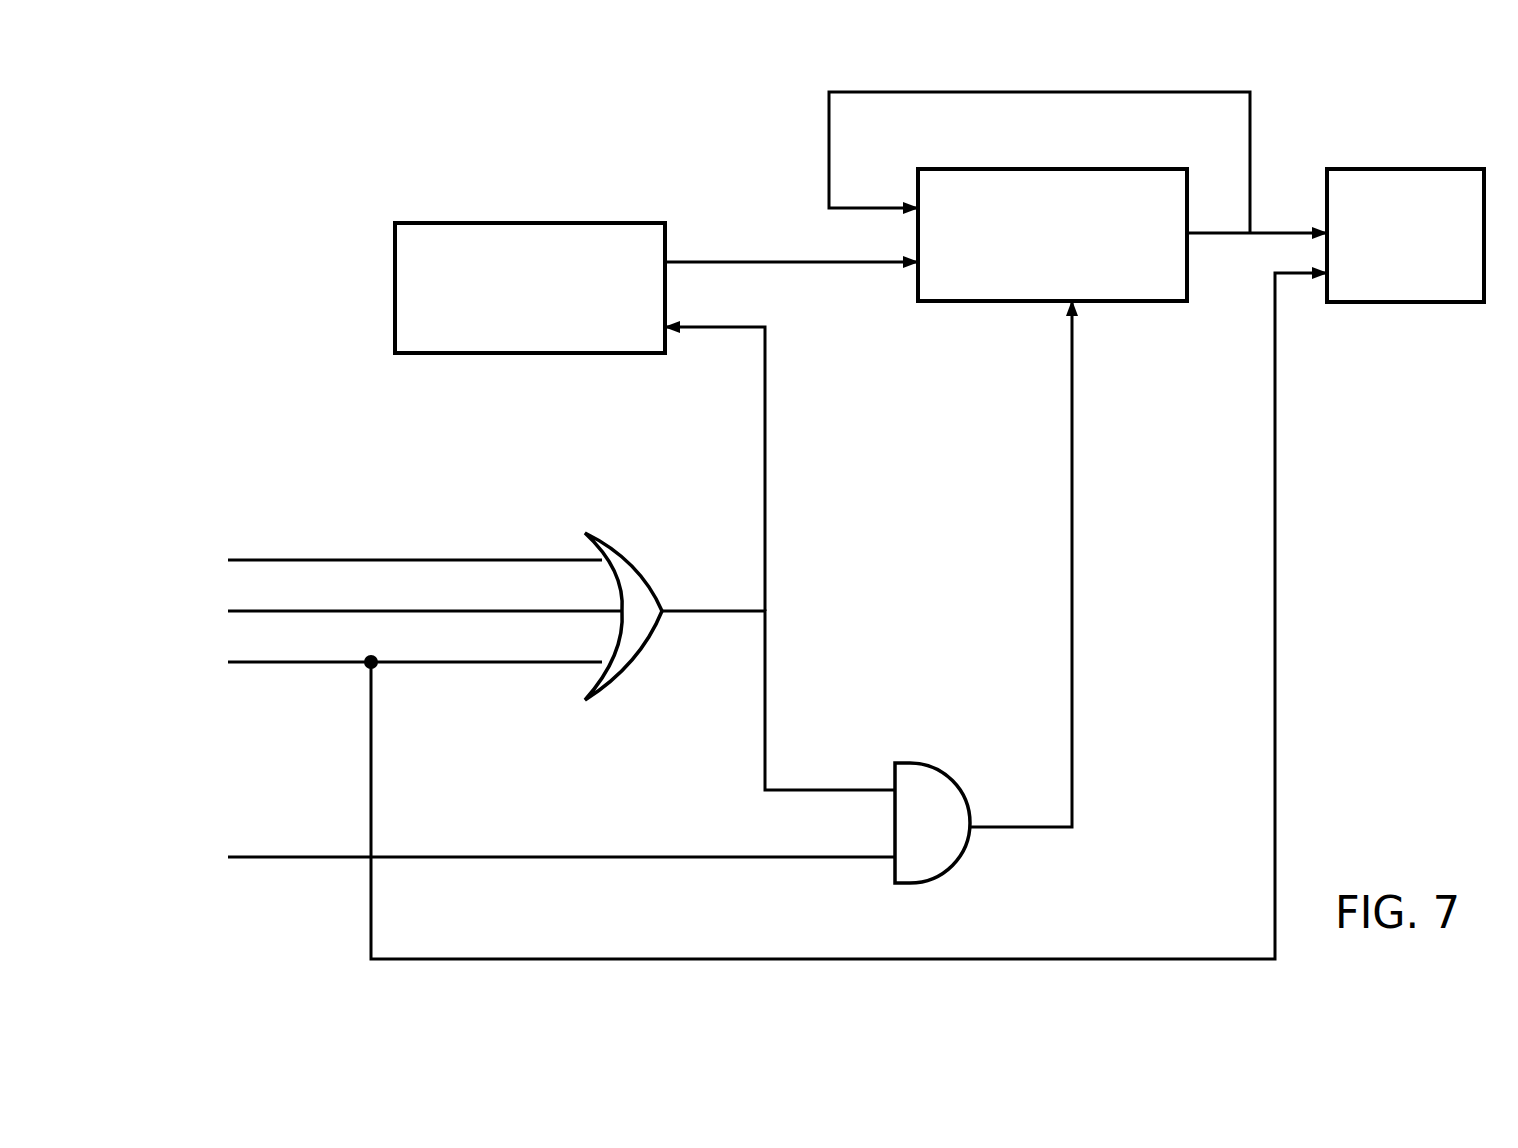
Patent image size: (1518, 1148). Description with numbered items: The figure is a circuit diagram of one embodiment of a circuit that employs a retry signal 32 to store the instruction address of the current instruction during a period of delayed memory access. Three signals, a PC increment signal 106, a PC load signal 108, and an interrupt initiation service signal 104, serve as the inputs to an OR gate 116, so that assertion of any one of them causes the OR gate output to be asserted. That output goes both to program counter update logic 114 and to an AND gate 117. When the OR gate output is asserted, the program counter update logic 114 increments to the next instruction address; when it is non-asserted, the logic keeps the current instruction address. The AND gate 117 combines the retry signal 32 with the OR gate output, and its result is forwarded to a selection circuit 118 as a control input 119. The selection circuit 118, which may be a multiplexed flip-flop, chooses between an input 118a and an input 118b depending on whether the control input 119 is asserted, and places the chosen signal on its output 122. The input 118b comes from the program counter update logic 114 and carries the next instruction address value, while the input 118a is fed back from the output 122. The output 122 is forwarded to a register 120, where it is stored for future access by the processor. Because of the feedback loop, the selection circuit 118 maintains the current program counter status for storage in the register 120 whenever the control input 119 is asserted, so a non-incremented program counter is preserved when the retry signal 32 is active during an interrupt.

The program counter update logic 114 is at (535, 222).
The selection circuit 118 is at (1123, 167).
The input 118a is at (873, 205).
The input 118b is at (875, 266).
The control input 119 is at (1074, 345).
The register 120 is at (1403, 167).
The output 122 is at (1215, 230).
The OR gate 116 is at (618, 540).
The AND gate 117 is at (948, 764).
The PC increment signal 106 is at (222, 540).
The PC load signal 108 is at (222, 588).
The interrupt initiation service signal 104 is at (222, 636).
The retry signal 32 is at (222, 838).